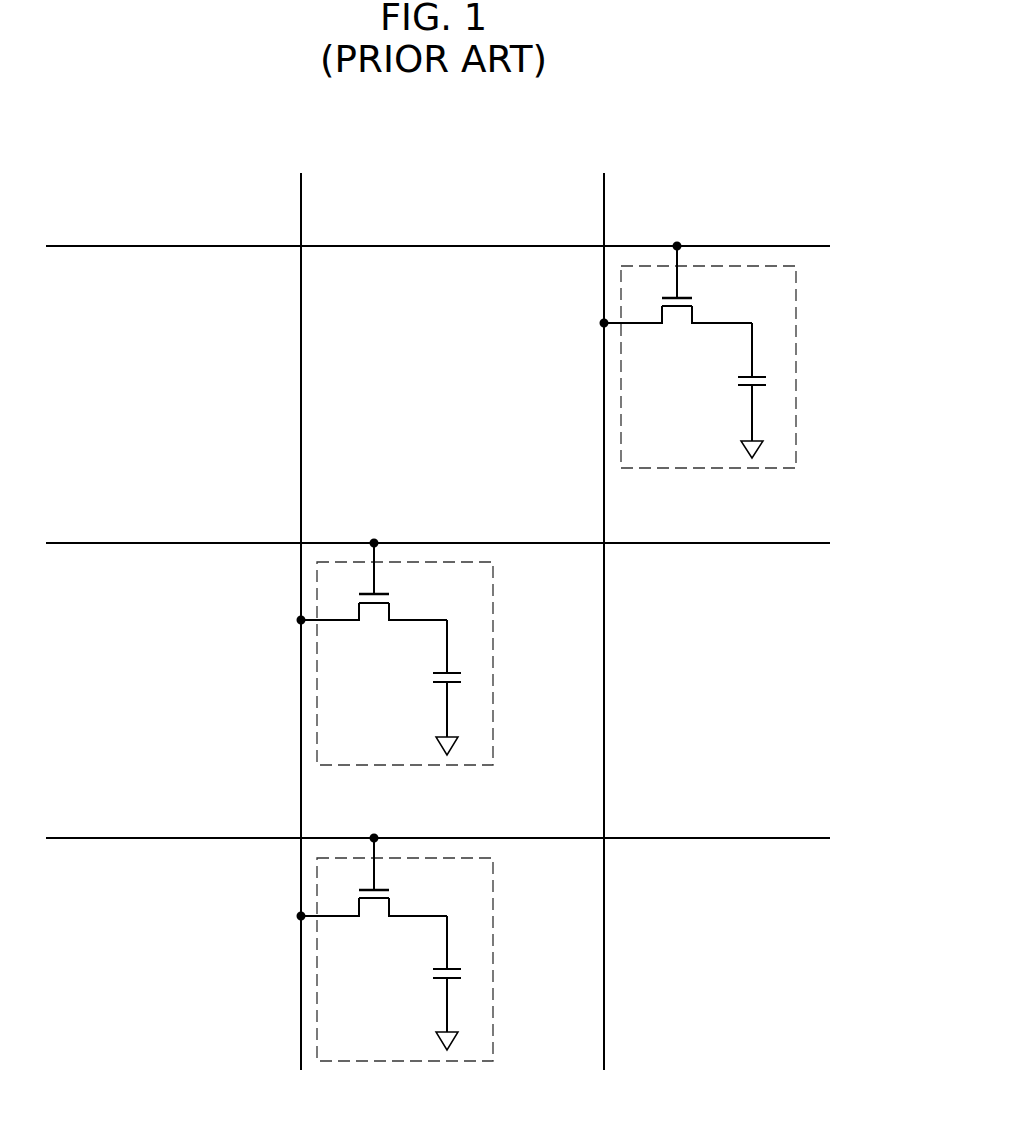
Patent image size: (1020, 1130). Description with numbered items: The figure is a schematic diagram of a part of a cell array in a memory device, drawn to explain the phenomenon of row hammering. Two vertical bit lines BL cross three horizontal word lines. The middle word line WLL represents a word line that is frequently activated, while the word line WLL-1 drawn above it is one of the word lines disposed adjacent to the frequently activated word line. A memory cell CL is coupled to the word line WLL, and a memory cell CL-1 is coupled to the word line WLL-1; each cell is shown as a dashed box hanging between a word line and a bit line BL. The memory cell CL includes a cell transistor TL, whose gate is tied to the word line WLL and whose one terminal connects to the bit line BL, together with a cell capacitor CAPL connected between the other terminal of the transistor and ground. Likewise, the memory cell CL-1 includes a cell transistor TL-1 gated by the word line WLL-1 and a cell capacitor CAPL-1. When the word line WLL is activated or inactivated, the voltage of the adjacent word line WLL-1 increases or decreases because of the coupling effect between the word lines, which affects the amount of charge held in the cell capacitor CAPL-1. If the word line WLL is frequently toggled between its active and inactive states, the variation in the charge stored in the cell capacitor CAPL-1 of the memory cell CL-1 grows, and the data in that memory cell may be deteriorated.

The bit line BL is at (452, 605).
The word line WLL-1 is at (470, 246).
The word line WLL is at (462, 544).
The memory cell CL-1 is at (732, 357).
The cell transistor TL-1 is at (677, 299).
The cell capacitor CAPL-1 is at (716, 390).
The memory cell CL is at (423, 654).
The cell transistor TL is at (373, 597).
The cell capacitor CAPL is at (422, 687).